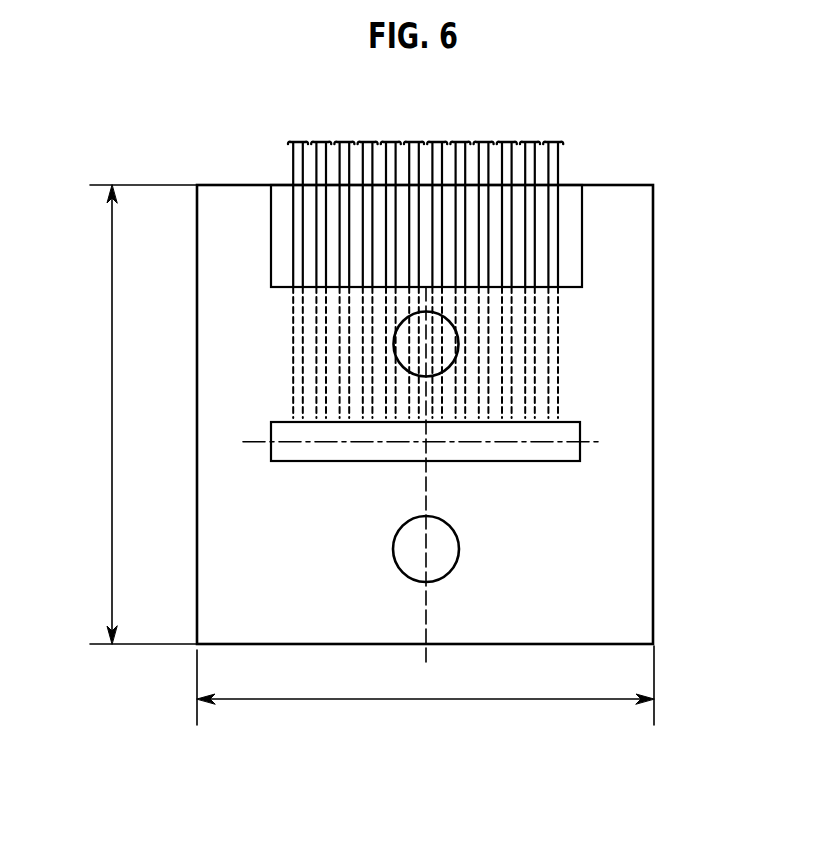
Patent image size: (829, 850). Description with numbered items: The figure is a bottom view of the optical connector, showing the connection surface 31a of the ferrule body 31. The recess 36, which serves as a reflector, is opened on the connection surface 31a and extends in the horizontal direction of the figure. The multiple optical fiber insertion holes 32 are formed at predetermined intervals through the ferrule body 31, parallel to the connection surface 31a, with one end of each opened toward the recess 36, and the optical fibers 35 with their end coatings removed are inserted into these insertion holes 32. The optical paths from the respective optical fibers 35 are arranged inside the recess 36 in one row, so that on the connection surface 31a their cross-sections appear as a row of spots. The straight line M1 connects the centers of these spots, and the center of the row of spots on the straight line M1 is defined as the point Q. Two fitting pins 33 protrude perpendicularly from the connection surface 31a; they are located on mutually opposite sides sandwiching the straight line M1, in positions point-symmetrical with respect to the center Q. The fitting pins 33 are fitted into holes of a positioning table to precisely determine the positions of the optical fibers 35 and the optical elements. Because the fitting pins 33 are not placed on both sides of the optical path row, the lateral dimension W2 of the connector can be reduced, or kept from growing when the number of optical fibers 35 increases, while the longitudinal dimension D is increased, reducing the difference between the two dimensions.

The ferrule body 31 is at (628, 505).
The connection surface 31a is at (628, 247).
The optical fiber insertion holes 32 is at (295, 340).
The fitting pins 33 is at (458, 347).
The optical fibers 35 is at (548, 141).
The recess 36 is at (535, 448).
The straight line M1 is at (317, 442).
The center of the row of spots Q is at (426, 442).
The longitudinal dimension D is at (142, 414).
The lateral dimension W2 is at (425, 694).